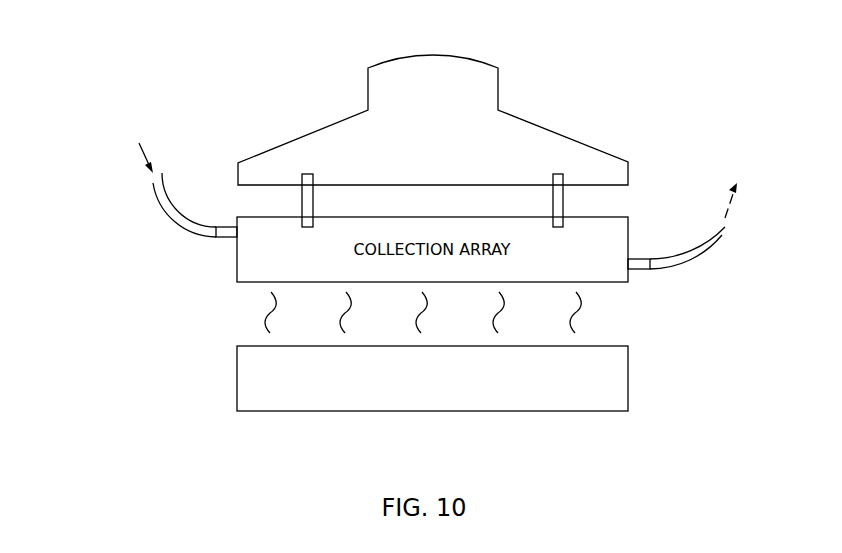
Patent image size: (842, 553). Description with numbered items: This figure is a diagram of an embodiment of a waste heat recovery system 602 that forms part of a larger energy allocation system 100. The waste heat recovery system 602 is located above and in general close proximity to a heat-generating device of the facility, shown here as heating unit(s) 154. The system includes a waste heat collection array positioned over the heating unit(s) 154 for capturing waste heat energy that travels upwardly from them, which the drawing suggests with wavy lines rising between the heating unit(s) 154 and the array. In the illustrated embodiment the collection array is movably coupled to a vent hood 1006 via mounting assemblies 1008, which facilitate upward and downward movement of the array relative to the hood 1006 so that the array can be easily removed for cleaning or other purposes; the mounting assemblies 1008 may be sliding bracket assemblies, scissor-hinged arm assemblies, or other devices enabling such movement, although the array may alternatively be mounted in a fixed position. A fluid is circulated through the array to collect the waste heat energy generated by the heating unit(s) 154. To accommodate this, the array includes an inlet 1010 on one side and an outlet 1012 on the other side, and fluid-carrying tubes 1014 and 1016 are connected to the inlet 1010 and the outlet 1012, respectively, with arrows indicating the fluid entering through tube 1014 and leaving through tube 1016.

The vent hood 1006 is at (500, 88).
The mounting assemblies 1008 is at (302, 195).
The inlet 1010 is at (227, 238).
The outlet 1012 is at (640, 270).
The fluid-carrying tube 1014 is at (170, 218).
The fluid-carrying tube 1016 is at (695, 260).
The heating unit(s) 154 is at (628, 388).
The system 100 is at (579, 436).
The waste heat recovery system 602 is at (110, 348).